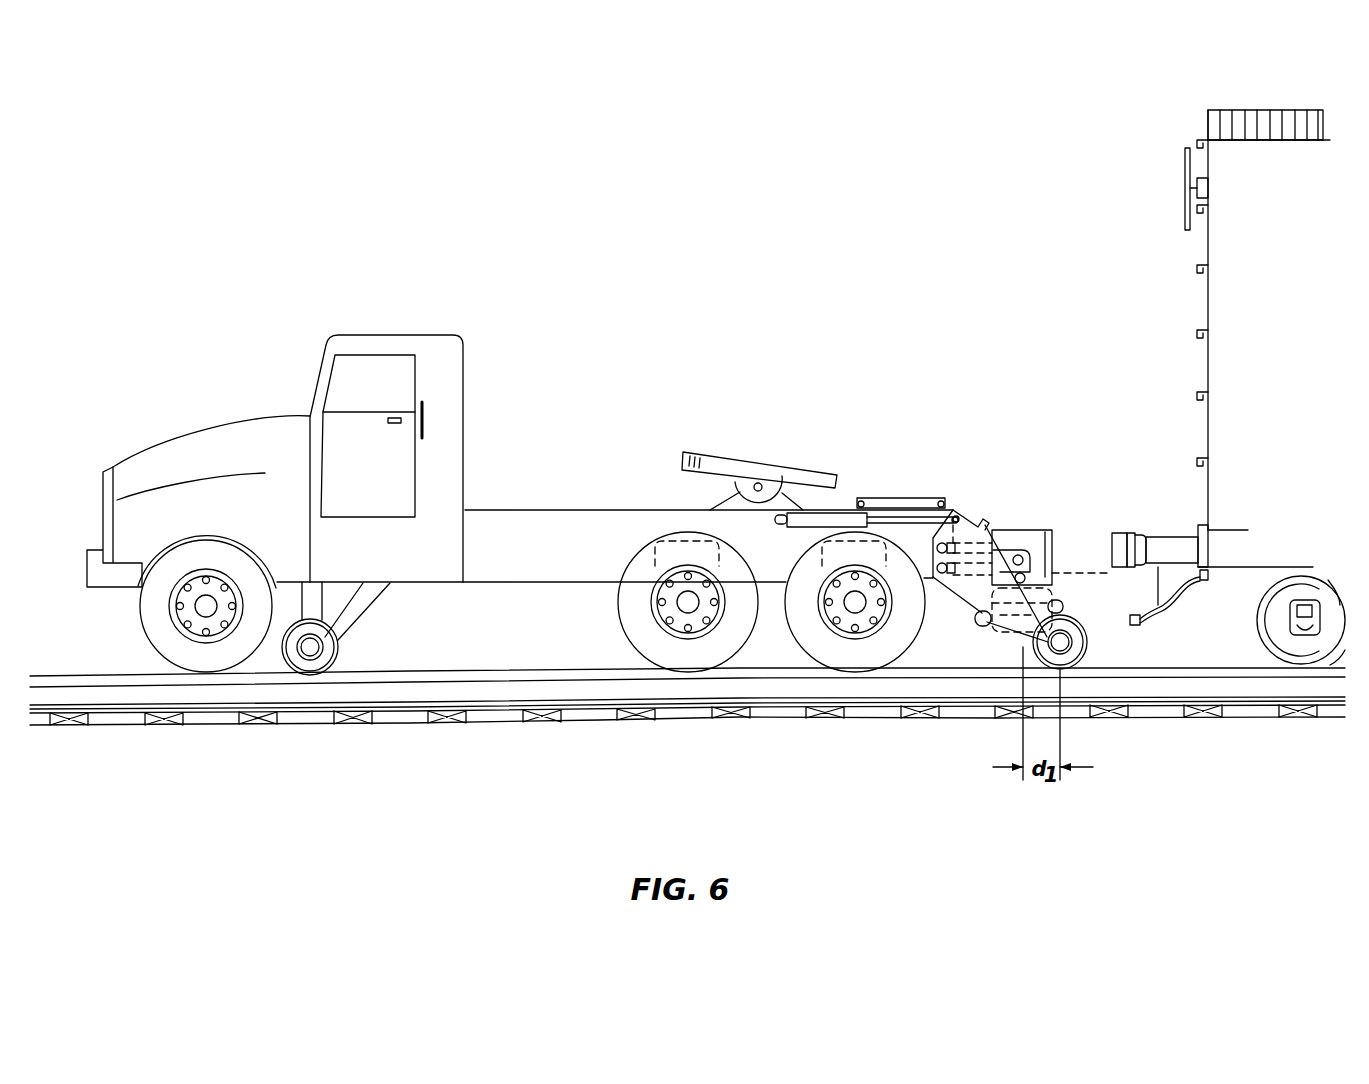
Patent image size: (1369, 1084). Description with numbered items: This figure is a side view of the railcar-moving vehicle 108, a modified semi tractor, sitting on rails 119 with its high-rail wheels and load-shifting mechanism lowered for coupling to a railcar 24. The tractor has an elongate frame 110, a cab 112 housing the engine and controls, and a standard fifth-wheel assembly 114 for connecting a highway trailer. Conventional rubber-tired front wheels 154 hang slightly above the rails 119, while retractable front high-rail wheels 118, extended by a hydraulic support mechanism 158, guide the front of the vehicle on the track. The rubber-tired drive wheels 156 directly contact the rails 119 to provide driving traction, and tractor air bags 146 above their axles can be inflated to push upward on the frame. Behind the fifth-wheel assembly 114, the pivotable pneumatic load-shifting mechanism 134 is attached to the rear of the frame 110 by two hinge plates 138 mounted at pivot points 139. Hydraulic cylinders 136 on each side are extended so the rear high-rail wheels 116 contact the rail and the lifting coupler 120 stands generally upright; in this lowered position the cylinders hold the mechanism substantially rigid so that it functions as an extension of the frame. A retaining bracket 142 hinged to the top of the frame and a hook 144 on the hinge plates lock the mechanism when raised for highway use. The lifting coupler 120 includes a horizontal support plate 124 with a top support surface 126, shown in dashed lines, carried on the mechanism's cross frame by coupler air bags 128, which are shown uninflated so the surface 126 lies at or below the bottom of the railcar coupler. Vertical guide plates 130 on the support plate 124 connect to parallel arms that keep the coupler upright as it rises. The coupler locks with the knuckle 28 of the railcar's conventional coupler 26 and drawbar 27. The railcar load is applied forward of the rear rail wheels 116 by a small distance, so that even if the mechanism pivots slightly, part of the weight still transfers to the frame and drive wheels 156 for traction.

The vehicle 108 is at (293, 325).
The frame 110 is at (545, 540).
The cab 112 is at (274, 440).
The fifth-wheel assembly 114 is at (742, 465).
The high-rail wheels 116 is at (1077, 647).
The high-rail wheels 118 is at (330, 655).
The rails 119 is at (503, 672).
The lifting coupler 120 is at (1000, 518).
The horizontal support plate 124 is at (1053, 573).
The top support surface 126 is at (1047, 580).
The coupler air bags 128 is at (988, 636).
The vertical guide plates 130 is at (1032, 548).
The load-shifting mechanism 134 is at (963, 433).
The hydraulic cylinders 136 is at (840, 512).
The hinge plates 138 is at (984, 630).
The pivot points 139 is at (947, 585).
The retaining bracket 142 is at (908, 500).
The hook 144 is at (977, 522).
The tractor air bags 146 is at (657, 562).
The front wheels 154 is at (155, 622).
The drive wheels 156 is at (833, 652).
The support mechanism 158 is at (353, 610).
The railcar 24 is at (1268, 298).
The coupler 26 is at (1140, 537).
The drawbar 27 is at (1173, 543).
The knuckle 28 is at (1118, 533).